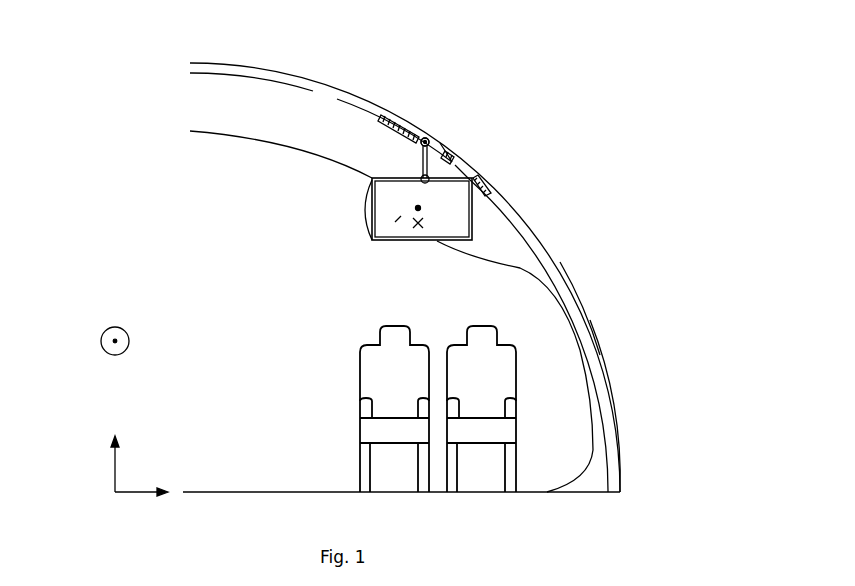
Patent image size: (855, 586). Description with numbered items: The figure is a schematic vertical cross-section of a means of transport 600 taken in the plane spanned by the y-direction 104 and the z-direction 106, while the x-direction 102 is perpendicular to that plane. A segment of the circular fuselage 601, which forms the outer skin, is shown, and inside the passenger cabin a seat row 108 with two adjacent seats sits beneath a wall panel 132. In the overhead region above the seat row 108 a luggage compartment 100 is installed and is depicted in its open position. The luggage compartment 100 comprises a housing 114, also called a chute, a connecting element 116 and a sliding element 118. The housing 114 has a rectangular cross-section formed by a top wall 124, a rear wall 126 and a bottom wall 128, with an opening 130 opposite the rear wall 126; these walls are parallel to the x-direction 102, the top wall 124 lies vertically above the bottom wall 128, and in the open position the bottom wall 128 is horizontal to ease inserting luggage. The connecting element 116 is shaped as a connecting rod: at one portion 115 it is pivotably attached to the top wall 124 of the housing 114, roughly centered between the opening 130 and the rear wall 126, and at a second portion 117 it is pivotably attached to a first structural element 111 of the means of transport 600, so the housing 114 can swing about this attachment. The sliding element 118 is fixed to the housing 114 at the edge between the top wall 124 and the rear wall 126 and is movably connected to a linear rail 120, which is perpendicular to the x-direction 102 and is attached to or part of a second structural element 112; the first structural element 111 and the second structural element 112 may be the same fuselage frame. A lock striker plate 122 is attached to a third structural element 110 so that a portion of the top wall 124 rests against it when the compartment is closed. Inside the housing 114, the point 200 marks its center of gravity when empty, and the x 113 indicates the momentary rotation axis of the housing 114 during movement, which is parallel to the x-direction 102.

The luggage compartment 100 is at (371, 277).
The x-direction 102 is at (110, 327).
The y-direction 104 is at (130, 493).
The z-direction 106 is at (115, 462).
The seat row 108 is at (330, 415).
The third structural element 110 is at (355, 98).
The first structural element 111 is at (450, 157).
The second structural element 112 is at (473, 218).
The momentary rotation axis 113 is at (418, 228).
The housing 114 is at (397, 220).
The portion of the connecting element 115 is at (462, 172).
The connecting element 116 is at (445, 137).
The second portion of the connecting element 117 is at (432, 127).
The sliding element 118 is at (490, 190).
The rail 120 is at (503, 205).
The lock striker plate 122 is at (380, 122).
The top wall 124 is at (390, 177).
The rear wall 126 is at (545, 250).
The bottom wall 128 is at (450, 242).
The opening 130 is at (352, 210).
The wall panel 132 is at (293, 147).
The center of gravity 200 is at (418, 208).
The means of transport 600 is at (637, 85).
The fuselage 601 is at (602, 370).